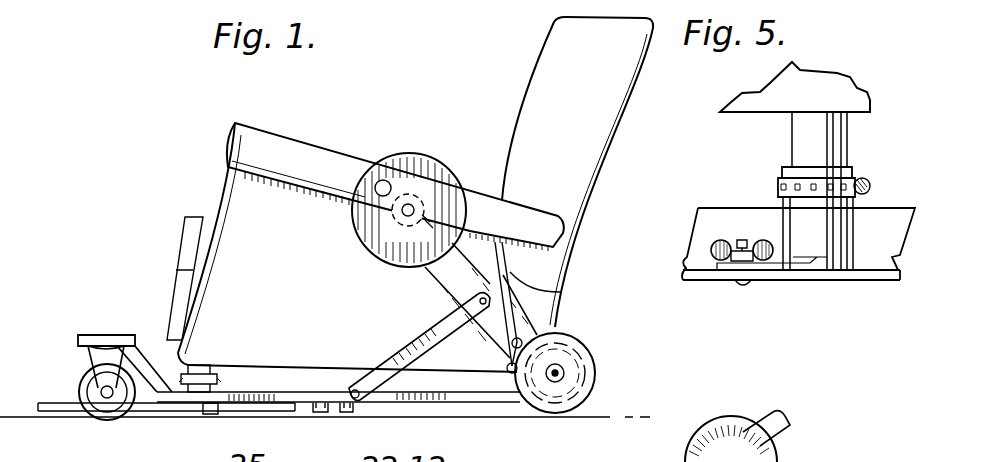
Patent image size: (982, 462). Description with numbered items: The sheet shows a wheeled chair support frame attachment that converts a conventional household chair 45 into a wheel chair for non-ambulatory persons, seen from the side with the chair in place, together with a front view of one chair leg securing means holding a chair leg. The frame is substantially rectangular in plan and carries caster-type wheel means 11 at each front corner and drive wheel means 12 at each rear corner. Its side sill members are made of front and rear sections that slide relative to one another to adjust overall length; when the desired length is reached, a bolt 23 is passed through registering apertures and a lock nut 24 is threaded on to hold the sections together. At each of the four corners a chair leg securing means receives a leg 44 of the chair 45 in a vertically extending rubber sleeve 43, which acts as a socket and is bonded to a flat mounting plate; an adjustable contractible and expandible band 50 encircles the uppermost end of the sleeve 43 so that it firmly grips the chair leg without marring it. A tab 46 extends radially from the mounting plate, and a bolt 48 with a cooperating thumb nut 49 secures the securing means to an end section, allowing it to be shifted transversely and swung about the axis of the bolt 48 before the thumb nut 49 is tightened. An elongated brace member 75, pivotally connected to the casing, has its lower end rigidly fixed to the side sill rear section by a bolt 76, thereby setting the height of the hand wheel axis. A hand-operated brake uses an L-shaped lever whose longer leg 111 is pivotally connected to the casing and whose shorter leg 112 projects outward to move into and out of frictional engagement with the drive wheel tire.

In FIG. 1, the wheel means 11 is at (78, 378).
In FIG. 1, the drive wheel means 12 is at (612, 379).
In FIG. 1, the bolt 23 is at (347, 410).
In FIG. 1, the lock nut 24 is at (333, 413).
In FIG. 1, the chair leg 44 is at (198, 364).
In FIG. 5, the chair leg 44 is at (810, 127).
In FIG. 1, the conventional household chair 45 is at (283, 252).
In FIG. 5, the conventional household chair 45 is at (780, 92).
In FIG. 5, the tab 46 is at (725, 272).
In FIG. 5, the bolt 48 is at (742, 240).
In FIG. 5, the thumb nut 49 is at (712, 250).
In FIG. 5, the adjustable contractible and expandible band 50 is at (778, 186).
In FIG. 5, the rubber sleeve 43 is at (825, 220).
In FIG. 1, the brace member 75 is at (400, 355).
In FIG. 1, the bolt 76 is at (355, 388).
In FIG. 1, the longer leg 111 is at (578, 298).
In FIG. 1, the shorter leg 112 is at (508, 375).